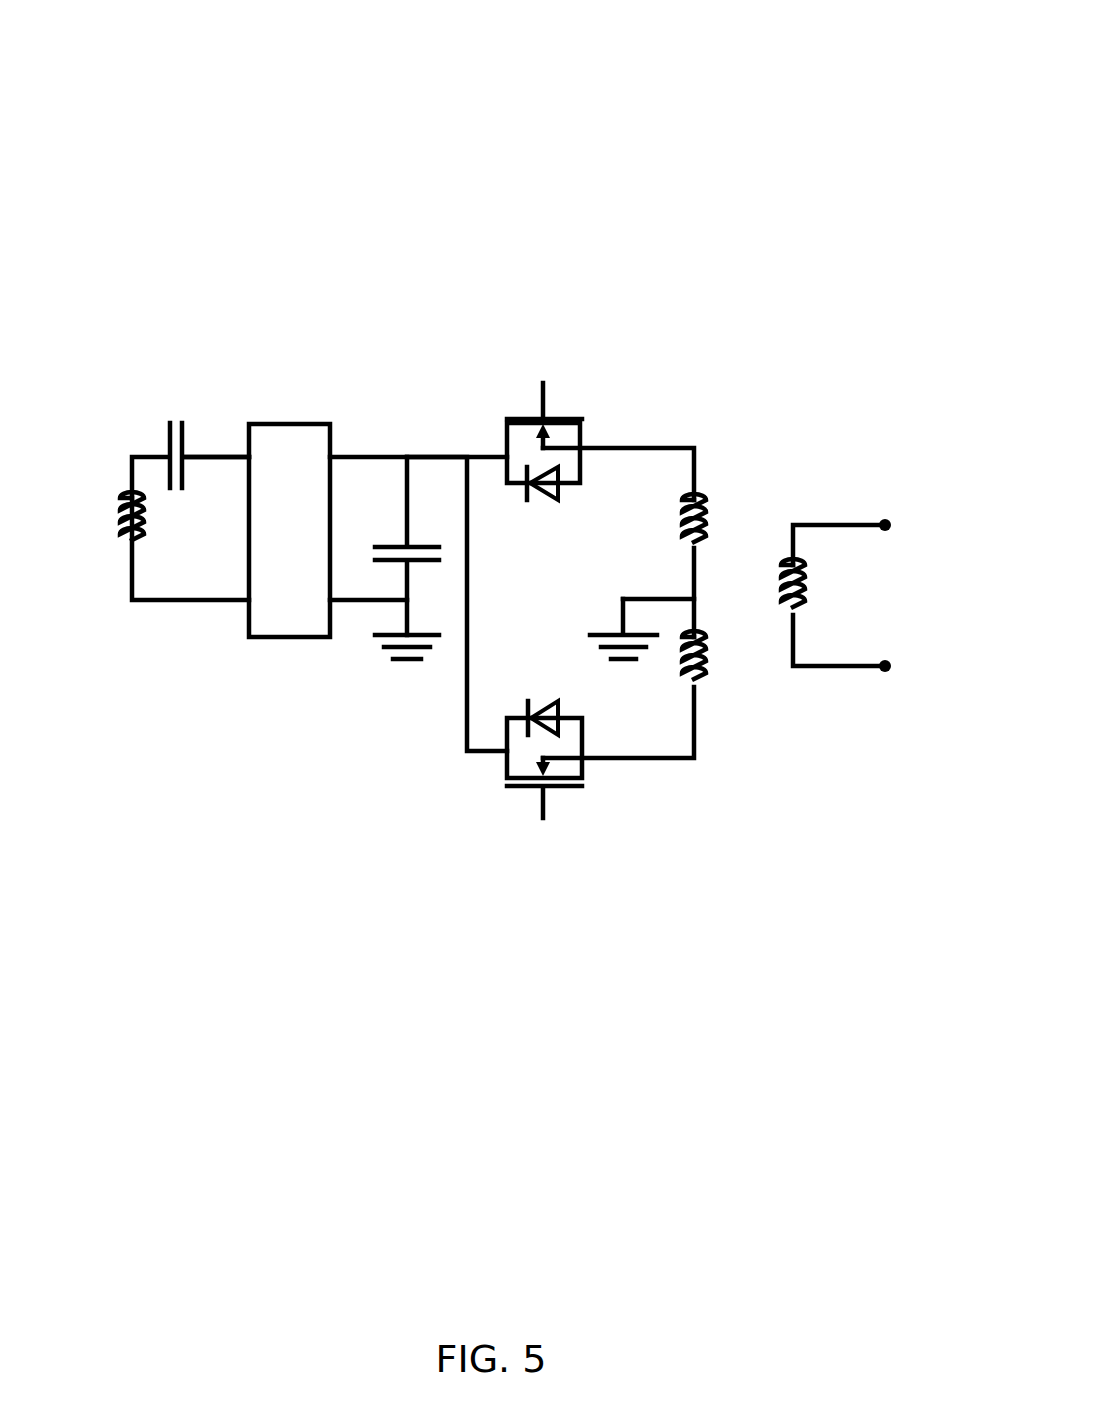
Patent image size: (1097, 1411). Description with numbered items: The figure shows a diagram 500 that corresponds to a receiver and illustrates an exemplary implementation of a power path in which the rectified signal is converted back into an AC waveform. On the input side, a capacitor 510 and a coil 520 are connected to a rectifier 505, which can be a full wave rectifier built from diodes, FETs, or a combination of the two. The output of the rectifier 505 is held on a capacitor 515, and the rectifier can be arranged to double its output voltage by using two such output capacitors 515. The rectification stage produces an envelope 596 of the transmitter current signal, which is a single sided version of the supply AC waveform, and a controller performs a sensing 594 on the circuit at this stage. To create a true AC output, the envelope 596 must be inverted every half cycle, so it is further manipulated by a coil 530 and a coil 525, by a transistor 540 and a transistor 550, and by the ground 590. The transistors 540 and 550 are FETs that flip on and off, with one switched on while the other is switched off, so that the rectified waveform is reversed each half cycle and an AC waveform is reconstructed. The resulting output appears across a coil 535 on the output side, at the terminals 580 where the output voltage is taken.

The diagram 500 is at (818, 91).
The rectifier 505 is at (263, 637).
The capacitor 510 is at (165, 440).
The capacitor 515 is at (395, 545).
The coil 520 is at (130, 547).
The coil 525 is at (706, 687).
The coil 530 is at (704, 501).
The coil 535 is at (806, 611).
The transistor 540 is at (575, 417).
The transistor 550 is at (578, 786).
The output voltage Vout 580 is at (870, 595).
The ground 590 is at (412, 660).
The sensing 594 is at (213, 440).
The envelope 596 is at (431, 447).